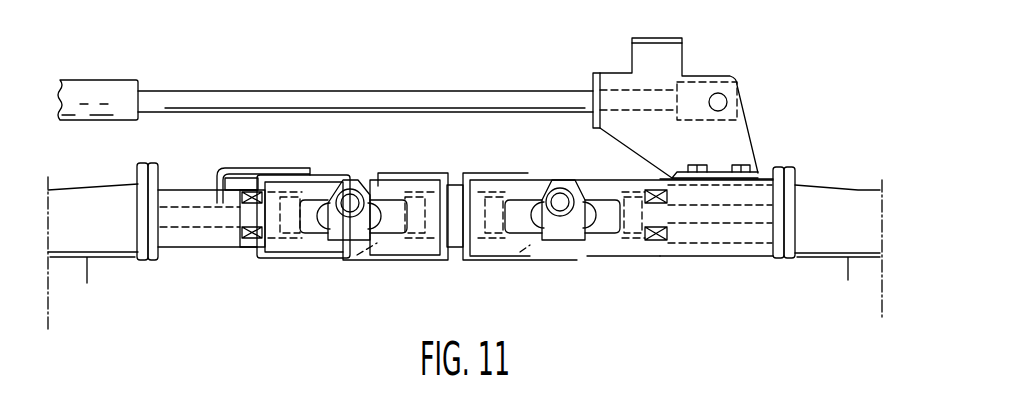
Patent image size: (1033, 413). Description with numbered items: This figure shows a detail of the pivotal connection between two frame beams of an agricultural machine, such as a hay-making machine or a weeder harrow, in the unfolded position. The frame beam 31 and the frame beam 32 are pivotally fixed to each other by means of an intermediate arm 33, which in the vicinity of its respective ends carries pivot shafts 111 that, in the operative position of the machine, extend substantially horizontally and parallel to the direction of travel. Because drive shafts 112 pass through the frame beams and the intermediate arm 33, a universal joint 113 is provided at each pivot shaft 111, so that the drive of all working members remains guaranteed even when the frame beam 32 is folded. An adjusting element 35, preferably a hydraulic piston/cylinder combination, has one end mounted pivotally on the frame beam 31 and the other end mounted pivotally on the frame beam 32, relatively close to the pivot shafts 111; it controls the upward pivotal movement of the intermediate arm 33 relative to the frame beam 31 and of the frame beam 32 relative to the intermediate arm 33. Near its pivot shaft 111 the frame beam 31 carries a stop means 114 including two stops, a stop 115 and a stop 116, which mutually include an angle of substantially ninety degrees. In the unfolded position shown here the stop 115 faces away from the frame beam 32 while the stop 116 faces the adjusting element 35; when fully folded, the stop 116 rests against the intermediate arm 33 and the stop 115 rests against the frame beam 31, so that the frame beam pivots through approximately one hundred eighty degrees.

The frame beam 31 is at (93, 195).
The frame beam 32 is at (810, 187).
The intermediate arm 33 is at (452, 187).
The adjusting element 35 is at (112, 90).
The pivot shaft 111 is at (350, 200).
The drive shaft 112 is at (178, 212).
The universal joint 113 is at (309, 243).
The stop means 114 is at (667, 65).
The stop 115 is at (652, 38).
The stop 116 is at (592, 75).